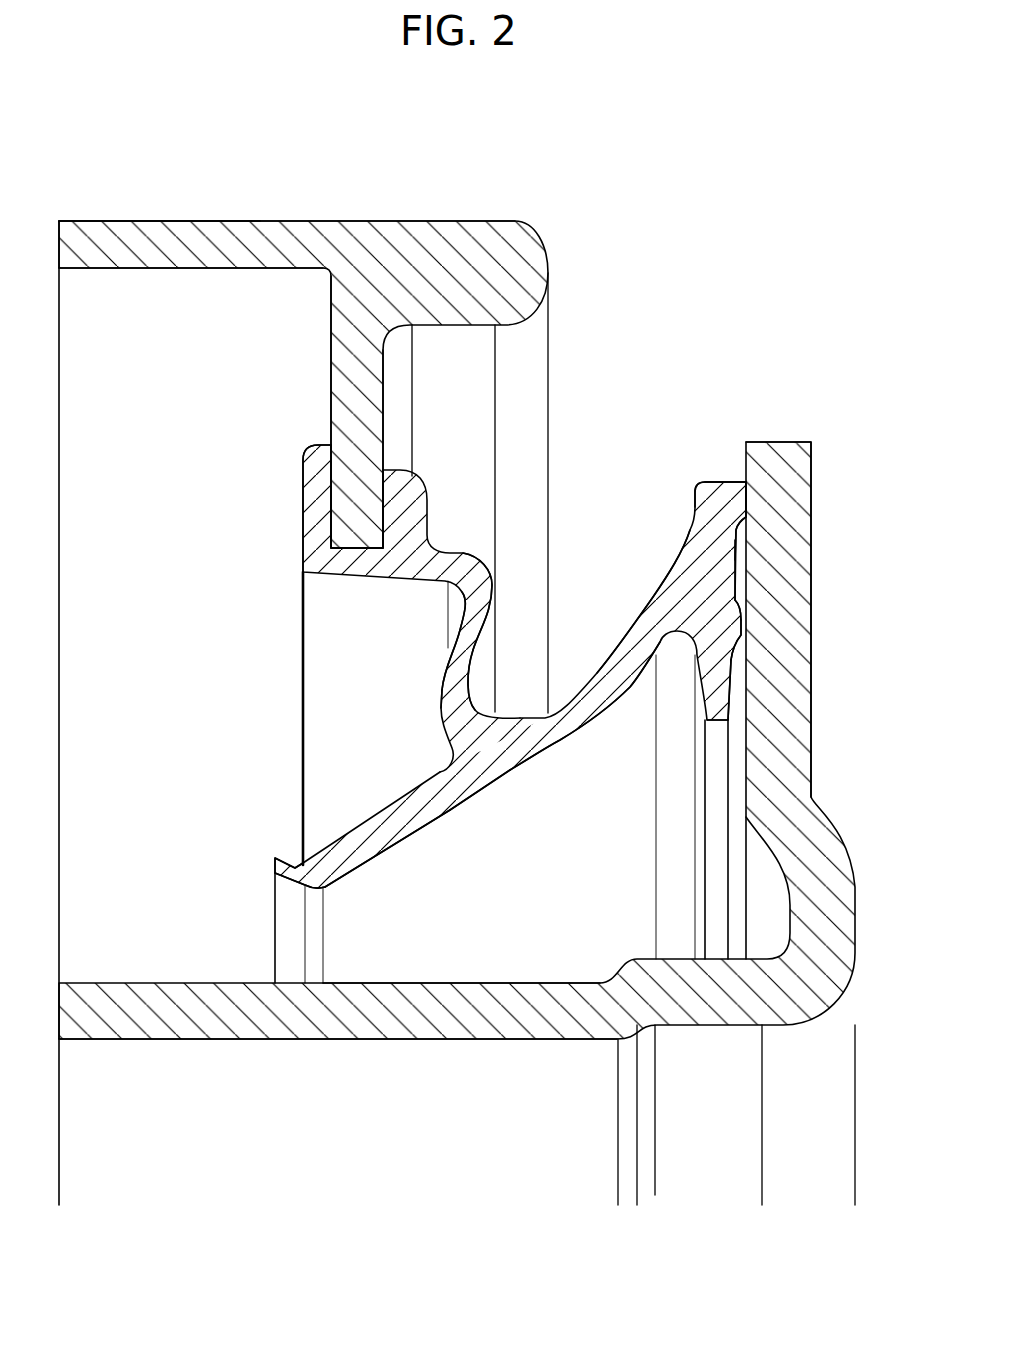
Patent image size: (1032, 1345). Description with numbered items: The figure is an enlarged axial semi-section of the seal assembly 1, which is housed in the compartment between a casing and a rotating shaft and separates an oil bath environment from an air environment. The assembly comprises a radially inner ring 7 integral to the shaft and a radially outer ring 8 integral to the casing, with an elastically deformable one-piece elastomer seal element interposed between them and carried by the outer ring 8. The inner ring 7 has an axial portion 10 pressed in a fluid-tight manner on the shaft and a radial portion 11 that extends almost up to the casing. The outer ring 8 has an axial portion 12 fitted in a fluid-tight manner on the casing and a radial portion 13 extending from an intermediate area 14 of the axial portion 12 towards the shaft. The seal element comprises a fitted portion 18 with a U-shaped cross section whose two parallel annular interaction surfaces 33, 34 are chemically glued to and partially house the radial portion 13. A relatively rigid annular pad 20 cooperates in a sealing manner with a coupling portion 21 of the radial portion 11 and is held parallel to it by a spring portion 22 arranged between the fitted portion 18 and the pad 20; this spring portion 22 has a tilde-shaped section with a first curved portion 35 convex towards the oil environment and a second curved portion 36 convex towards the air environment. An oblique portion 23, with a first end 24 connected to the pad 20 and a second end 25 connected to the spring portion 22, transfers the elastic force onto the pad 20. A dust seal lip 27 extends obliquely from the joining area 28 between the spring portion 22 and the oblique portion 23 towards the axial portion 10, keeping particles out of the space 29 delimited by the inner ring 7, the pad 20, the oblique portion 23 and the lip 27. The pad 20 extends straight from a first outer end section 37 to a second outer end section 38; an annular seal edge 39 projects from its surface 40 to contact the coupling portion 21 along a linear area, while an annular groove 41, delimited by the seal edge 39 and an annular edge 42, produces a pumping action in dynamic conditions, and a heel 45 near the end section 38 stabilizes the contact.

The seal assembly 1 is at (742, 250).
The radially inner ring 7 is at (472, 823).
The radially outer ring 8 is at (303, 661).
The axial portion 10 is at (208, 1027).
The radial portion 11 is at (795, 677).
The axial portion 12 is at (236, 216).
The radial portion 13 is at (345, 363).
The intermediate area 14 is at (358, 240).
The fitted portion 18 is at (395, 625).
The annular pad 20 is at (530, 672).
The coupling portion 21 is at (738, 566).
The spring portion 22 is at (438, 645).
The oblique portion 23 is at (628, 698).
The first end 24 is at (653, 606).
The second end 25 is at (557, 737).
The dust seal lip 27 is at (288, 923).
The joining area 28 is at (500, 750).
The space 29 is at (467, 966).
The annular interaction surface 33 is at (370, 510).
The annular interaction surface 34 is at (340, 474).
The first curved portion 35 is at (486, 593).
The second curved portion 36 is at (448, 690).
The first outer end section 37 is at (718, 478).
The second outer end section 38 is at (710, 713).
The annular seal edge 39 is at (736, 496).
The surface 40 is at (745, 606).
The annular groove 41 is at (752, 533).
The annular edge 42 is at (733, 627).
The heel 45 is at (713, 692).